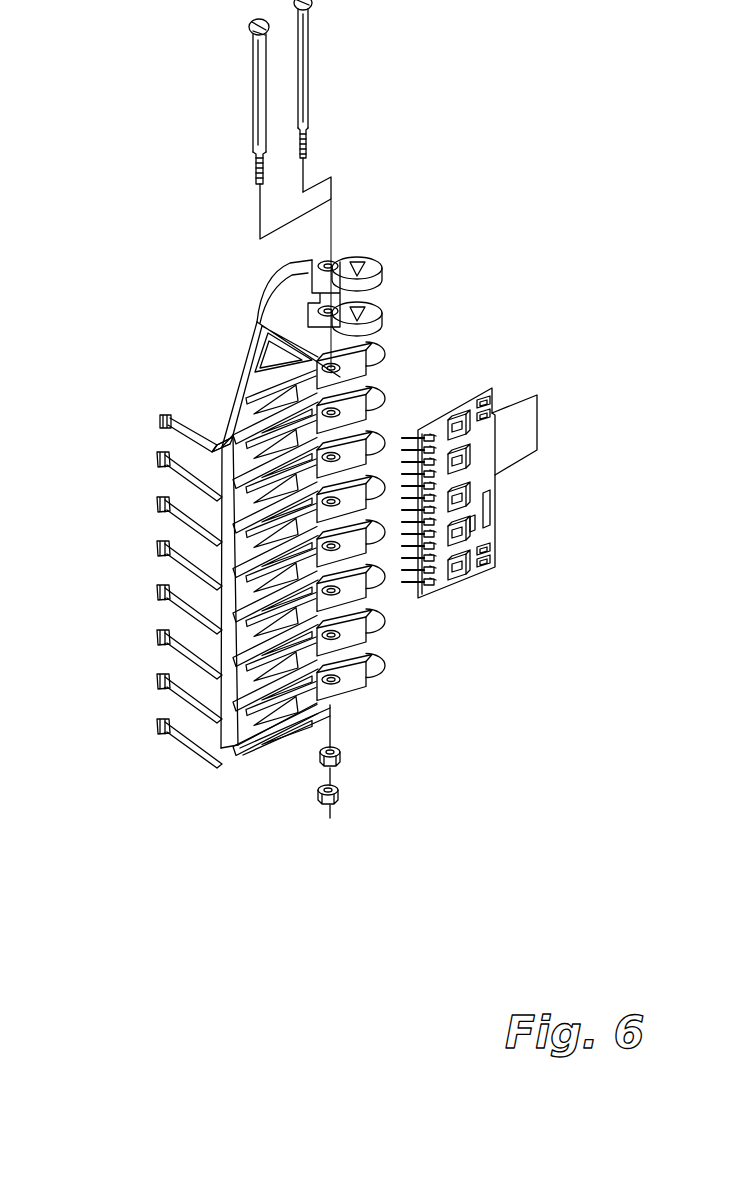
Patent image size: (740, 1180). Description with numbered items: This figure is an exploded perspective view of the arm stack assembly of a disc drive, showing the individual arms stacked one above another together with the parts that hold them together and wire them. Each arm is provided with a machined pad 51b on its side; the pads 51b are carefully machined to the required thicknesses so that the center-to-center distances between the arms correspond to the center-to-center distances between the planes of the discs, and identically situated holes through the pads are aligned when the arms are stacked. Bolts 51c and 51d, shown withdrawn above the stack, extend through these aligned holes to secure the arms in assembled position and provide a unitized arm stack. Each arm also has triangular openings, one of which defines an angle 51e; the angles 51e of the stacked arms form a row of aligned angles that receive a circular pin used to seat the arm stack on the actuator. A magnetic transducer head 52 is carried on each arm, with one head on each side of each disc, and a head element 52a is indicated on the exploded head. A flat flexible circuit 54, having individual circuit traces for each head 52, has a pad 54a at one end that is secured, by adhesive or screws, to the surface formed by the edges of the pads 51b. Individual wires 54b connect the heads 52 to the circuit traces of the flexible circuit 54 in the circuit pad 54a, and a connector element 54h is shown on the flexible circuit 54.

The pad 51b is at (363, 362).
The bolt 51c is at (310, 70).
The bolt 51d is at (253, 100).
The angle 51e is at (355, 256).
The head 52 is at (160, 422).
The contact arm 52a is at (195, 428).
The flat flexible circuit 54 is at (527, 396).
The pad 54a is at (488, 536).
The wires 54b is at (403, 594).
The board connector 54h is at (466, 574).